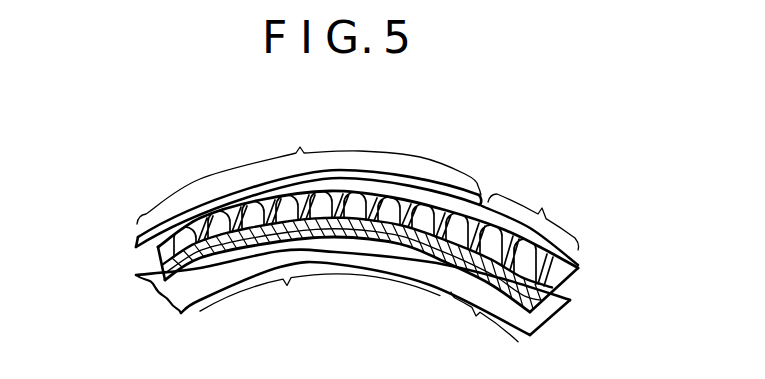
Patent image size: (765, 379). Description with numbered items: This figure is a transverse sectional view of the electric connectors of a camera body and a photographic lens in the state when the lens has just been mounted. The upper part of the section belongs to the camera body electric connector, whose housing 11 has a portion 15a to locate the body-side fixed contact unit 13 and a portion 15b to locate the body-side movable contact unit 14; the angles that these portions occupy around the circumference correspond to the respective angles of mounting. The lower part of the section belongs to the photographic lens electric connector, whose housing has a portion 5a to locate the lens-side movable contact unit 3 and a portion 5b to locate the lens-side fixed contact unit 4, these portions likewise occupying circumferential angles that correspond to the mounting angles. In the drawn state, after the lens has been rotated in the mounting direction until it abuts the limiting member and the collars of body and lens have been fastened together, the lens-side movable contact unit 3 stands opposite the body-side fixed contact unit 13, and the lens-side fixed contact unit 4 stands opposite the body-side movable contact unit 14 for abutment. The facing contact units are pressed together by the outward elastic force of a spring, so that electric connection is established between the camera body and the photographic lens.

The lens-side movable contact unit 3 is at (140, 283).
The lens-side fixed contact unit 4 is at (545, 321).
The portion to locate the lens-side movable contact unit 5a is at (320, 296).
The portion to locate the lens-side fixed contact unit 5b is at (481, 320).
The housing 11 is at (136, 245).
The body-side fixed contact unit 13 is at (480, 205).
The body-side movable contact unit 14 is at (576, 271).
The portion to locate the body-side fixed contact unit 15a is at (309, 169).
The portion to locate the body-side movable contact unit 15b is at (538, 211).